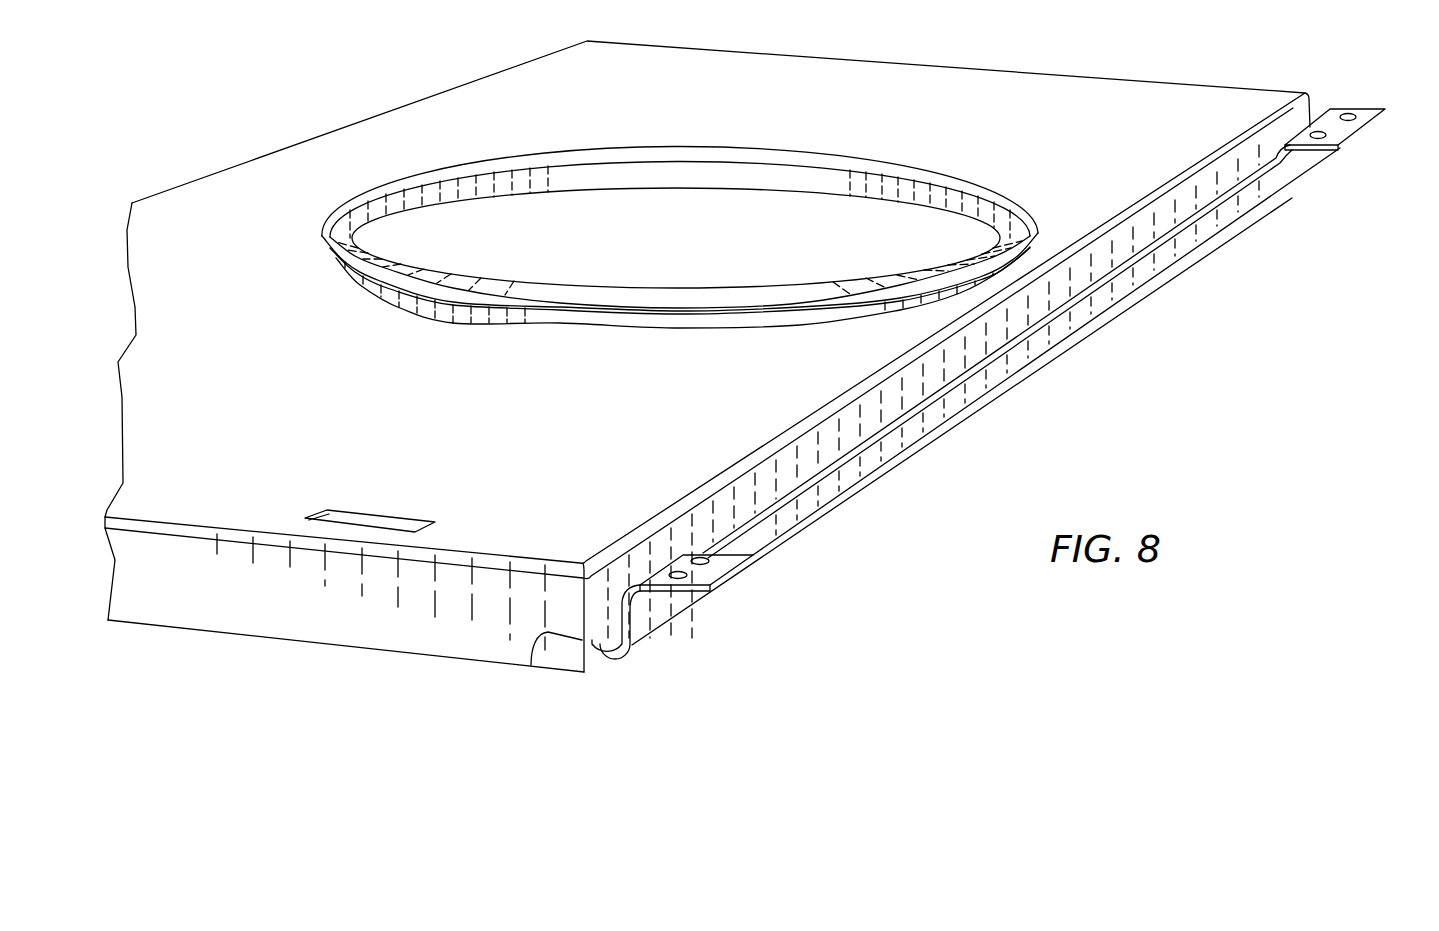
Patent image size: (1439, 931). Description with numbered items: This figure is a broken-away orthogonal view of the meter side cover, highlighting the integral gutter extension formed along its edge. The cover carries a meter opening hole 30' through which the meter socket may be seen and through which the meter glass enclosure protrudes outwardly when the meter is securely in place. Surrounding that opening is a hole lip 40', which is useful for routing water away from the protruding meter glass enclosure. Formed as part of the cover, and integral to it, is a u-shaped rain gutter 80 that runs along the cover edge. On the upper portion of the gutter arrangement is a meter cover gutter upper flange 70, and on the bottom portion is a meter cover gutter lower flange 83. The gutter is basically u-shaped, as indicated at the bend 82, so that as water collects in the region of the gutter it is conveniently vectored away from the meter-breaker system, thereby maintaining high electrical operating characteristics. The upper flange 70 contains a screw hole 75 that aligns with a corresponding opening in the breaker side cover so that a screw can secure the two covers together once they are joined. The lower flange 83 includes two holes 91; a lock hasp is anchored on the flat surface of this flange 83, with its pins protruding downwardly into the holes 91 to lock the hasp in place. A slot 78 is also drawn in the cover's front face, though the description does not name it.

The meter opening hole 30' is at (680, 203).
The hole lip 40' is at (680, 213).
The meter cover gutter upper flange 70 is at (1350, 127).
The screw hole 75 is at (1346, 113).
The slot 78 is at (367, 520).
The u-shaped rain gutter 80 is at (1177, 210).
The u-shaped portion of gutter 82 is at (531, 665).
The meter cover gutter lower flange 83 is at (716, 578).
The holes 91 is at (680, 576).